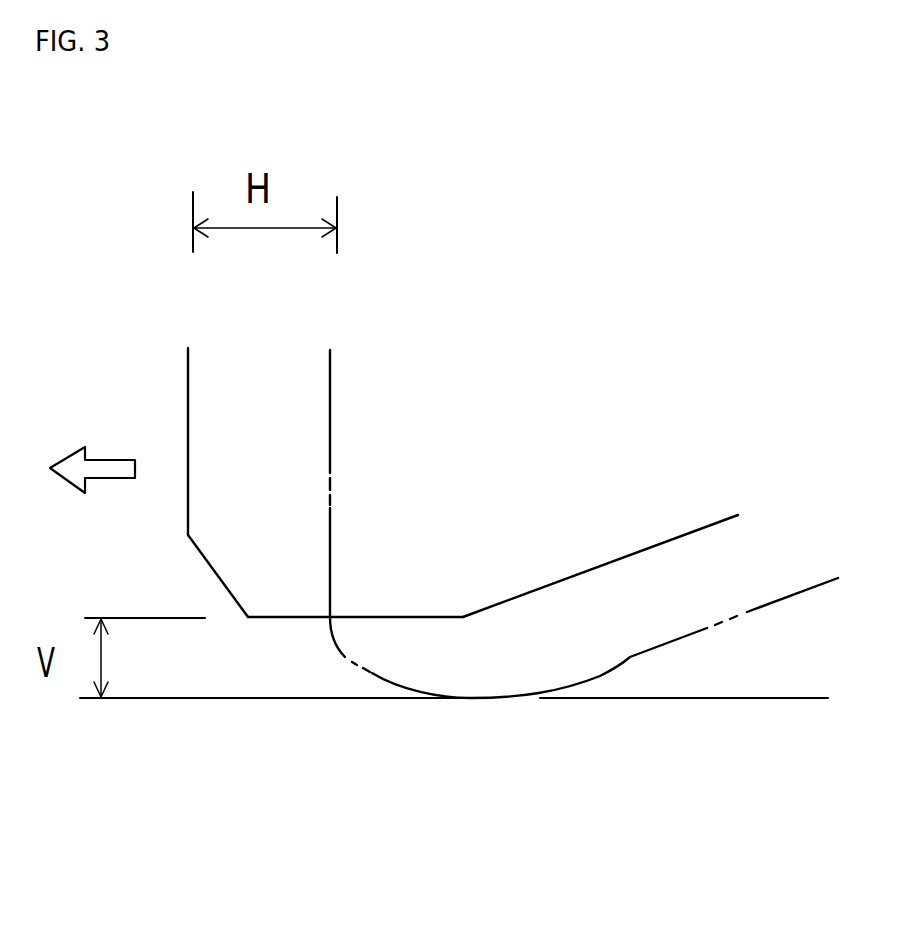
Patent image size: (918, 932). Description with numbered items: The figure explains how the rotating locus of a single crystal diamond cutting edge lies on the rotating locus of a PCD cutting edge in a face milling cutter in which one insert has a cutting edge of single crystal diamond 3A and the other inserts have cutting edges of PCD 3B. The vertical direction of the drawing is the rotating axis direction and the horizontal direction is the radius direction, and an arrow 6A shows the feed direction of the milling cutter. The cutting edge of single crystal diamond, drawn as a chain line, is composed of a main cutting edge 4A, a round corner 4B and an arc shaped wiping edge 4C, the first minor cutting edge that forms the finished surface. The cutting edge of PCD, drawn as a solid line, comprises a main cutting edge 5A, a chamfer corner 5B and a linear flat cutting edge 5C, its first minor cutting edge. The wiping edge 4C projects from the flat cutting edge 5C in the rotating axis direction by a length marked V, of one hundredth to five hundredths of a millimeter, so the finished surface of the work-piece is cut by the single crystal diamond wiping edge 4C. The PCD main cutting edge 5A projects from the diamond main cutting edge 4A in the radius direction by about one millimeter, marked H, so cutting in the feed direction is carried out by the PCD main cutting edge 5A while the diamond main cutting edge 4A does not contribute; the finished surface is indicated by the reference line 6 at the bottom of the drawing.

The single crystal diamond 3A is at (556, 555).
The PCD 3B is at (175, 530).
The main cutting edge 4A is at (332, 530).
The round corner 4B is at (328, 637).
The wiping edge 4C is at (403, 685).
The main cutting edge 5A is at (188, 403).
The chamfer corner 5B is at (198, 555).
The linear flat cutting edge 5C is at (278, 618).
The reference plane 6 is at (780, 700).
The arrow 6A is at (92, 447).